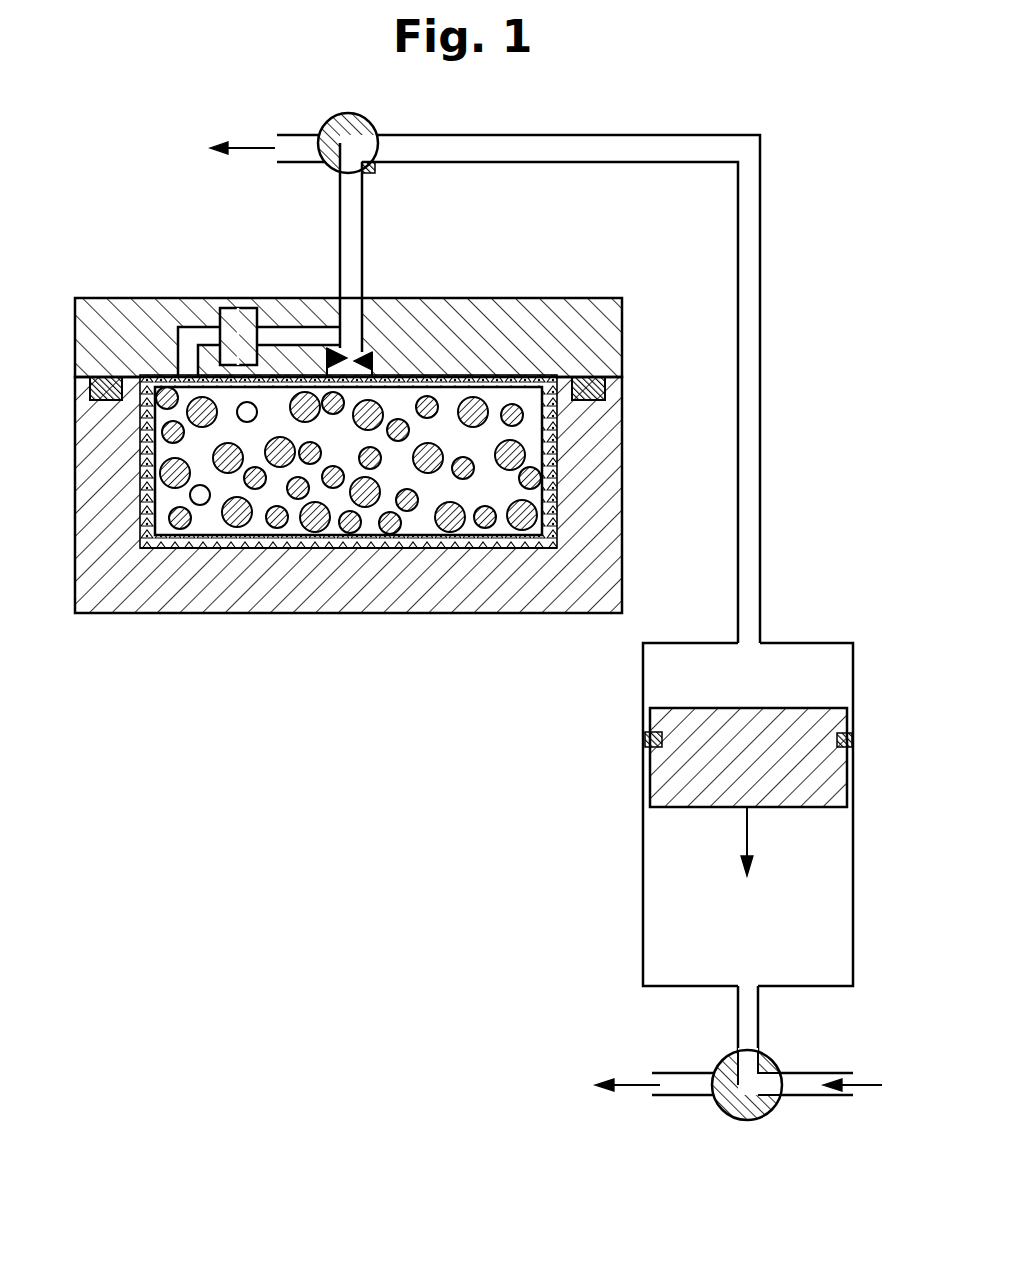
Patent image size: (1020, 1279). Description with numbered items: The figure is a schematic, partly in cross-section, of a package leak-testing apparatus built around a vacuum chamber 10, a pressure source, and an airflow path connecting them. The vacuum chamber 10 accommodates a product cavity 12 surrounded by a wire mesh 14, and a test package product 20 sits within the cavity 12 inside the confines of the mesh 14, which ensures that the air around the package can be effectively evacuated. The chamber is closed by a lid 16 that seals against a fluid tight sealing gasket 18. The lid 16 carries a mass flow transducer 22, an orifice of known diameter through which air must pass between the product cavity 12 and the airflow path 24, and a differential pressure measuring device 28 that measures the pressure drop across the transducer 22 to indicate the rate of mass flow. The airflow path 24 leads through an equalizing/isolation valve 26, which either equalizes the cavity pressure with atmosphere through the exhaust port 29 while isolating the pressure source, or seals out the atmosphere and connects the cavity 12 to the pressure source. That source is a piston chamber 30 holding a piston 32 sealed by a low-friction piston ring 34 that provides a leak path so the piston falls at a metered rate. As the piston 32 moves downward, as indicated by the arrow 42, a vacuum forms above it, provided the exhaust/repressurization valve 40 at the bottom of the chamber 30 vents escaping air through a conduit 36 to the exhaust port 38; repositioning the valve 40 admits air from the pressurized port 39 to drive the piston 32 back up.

The vacuum chamber 10 is at (327, 613).
The product cavity 12 is at (260, 535).
The wire mesh 14 is at (176, 548).
The lid 16 is at (372, 293).
The fluid tight sealing gasket 18 is at (606, 381).
The test package product 20 is at (178, 548).
The mass flow transducer 22 is at (373, 352).
The airflow path 24 is at (338, 234).
The equalizing/isolation valve 26 is at (372, 170).
The differential pressure measuring device 28 is at (210, 298).
The exhaust port 29 is at (247, 149).
The piston chamber 30 is at (643, 672).
The piston 32 is at (650, 792).
The piston ring 34 is at (645, 738).
The conduit 36 is at (740, 1022).
The exhaust port 38 is at (632, 1088).
The pressurized port 39 is at (880, 1085).
The exhaust/repressurization valve 40 is at (722, 1110).
The piston downward movement 42 is at (747, 833).